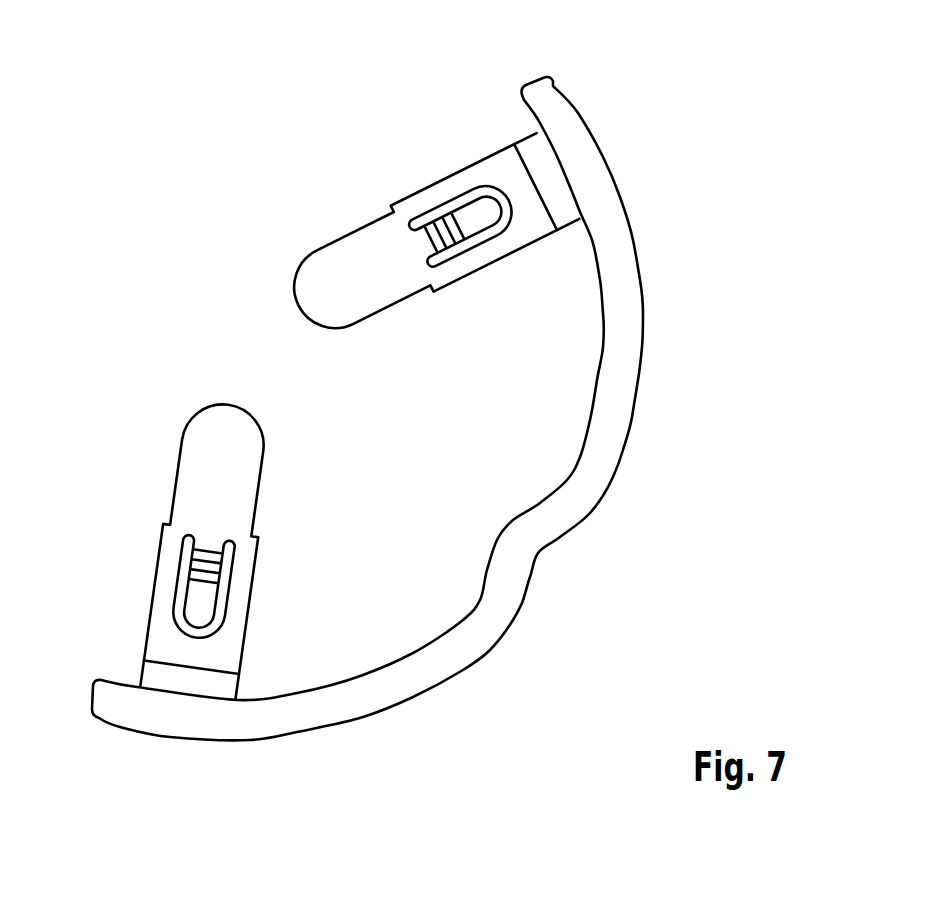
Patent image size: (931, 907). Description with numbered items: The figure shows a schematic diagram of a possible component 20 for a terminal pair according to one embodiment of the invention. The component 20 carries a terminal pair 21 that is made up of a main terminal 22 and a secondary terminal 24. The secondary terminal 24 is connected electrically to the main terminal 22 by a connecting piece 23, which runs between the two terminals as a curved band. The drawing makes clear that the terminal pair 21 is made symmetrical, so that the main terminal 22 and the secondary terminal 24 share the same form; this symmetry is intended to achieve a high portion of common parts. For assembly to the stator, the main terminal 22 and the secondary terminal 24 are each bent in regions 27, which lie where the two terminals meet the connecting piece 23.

The component 20 is at (399, 397).
The terminal pair 21 is at (280, 298).
The main terminal 22 is at (417, 157).
The connecting piece 23 is at (610, 400).
The secondary terminal 24 is at (127, 562).
The regions 27 is at (557, 173).